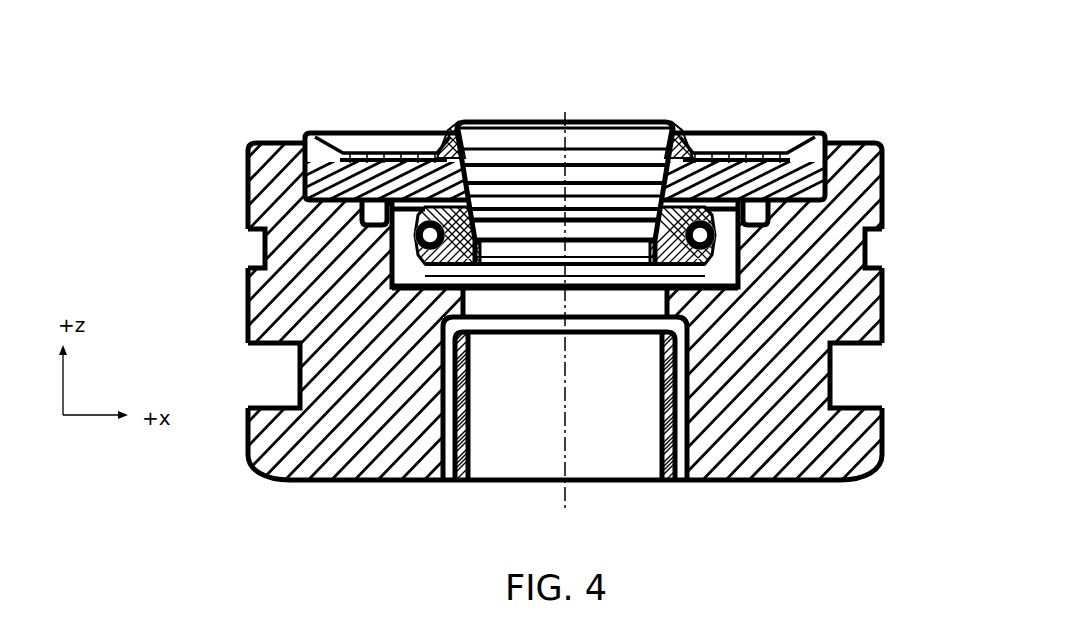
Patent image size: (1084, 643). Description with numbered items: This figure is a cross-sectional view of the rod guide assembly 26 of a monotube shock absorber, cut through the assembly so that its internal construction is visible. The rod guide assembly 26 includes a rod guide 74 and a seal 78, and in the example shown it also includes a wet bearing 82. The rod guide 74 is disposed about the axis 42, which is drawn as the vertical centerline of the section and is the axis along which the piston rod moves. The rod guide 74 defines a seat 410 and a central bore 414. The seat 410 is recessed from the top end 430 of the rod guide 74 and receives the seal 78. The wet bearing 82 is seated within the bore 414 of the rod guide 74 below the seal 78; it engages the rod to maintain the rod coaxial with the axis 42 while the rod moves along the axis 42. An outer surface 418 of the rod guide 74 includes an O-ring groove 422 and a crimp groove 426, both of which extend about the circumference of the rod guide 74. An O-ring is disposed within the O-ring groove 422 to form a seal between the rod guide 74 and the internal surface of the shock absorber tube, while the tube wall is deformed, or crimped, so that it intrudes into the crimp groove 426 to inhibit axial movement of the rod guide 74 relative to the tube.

The rod guide assembly 26 is at (292, 481).
The axis 42 is at (567, 118).
The rod guide 74 is at (285, 305).
The seal 78 is at (398, 150).
The wet bearing 82 is at (462, 440).
The seat 410 is at (332, 188).
The central bore 414 is at (692, 442).
The outer surface 418 is at (884, 318).
The O-ring groove 422 is at (833, 382).
The crimp groove 426 is at (867, 247).
The top end 430 is at (852, 140).